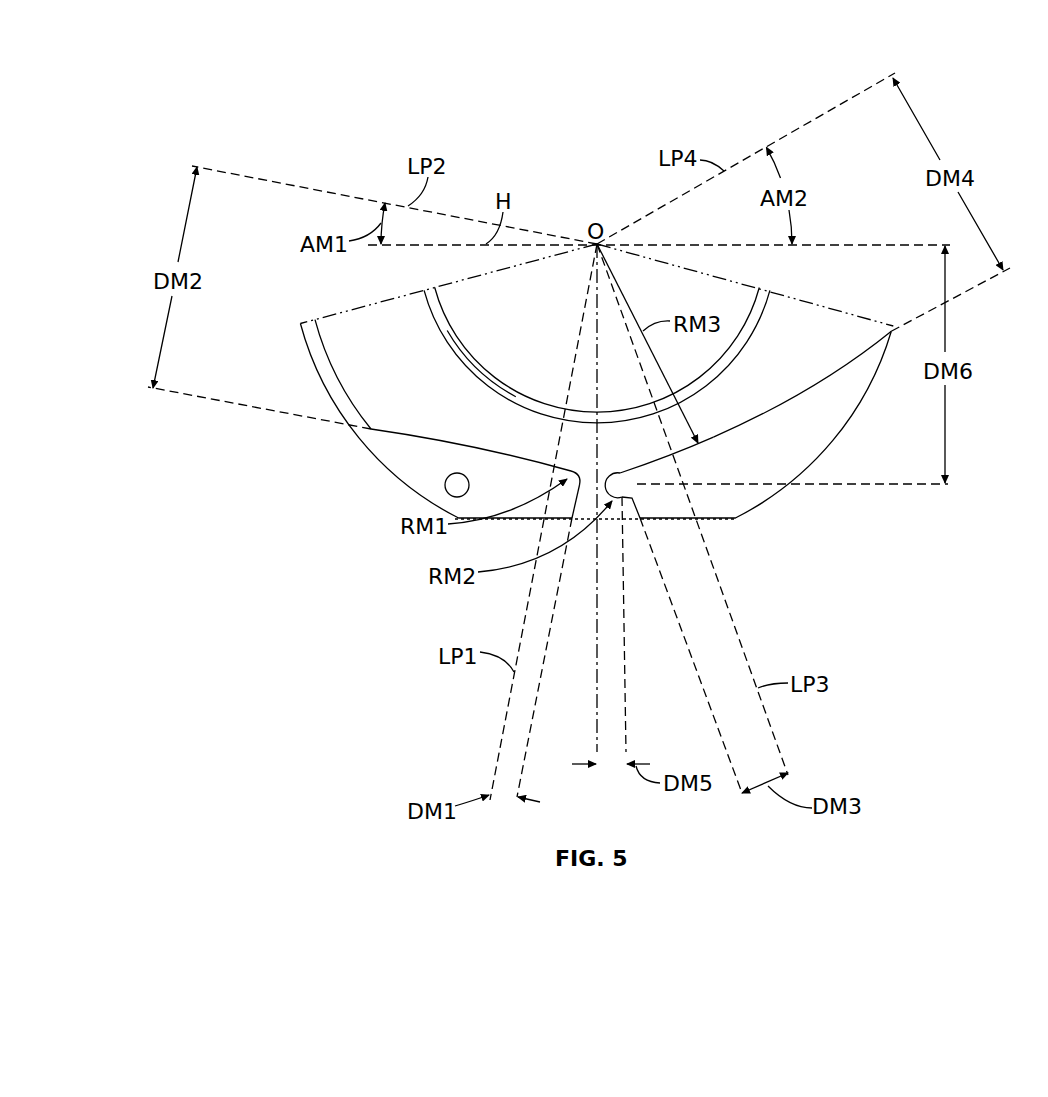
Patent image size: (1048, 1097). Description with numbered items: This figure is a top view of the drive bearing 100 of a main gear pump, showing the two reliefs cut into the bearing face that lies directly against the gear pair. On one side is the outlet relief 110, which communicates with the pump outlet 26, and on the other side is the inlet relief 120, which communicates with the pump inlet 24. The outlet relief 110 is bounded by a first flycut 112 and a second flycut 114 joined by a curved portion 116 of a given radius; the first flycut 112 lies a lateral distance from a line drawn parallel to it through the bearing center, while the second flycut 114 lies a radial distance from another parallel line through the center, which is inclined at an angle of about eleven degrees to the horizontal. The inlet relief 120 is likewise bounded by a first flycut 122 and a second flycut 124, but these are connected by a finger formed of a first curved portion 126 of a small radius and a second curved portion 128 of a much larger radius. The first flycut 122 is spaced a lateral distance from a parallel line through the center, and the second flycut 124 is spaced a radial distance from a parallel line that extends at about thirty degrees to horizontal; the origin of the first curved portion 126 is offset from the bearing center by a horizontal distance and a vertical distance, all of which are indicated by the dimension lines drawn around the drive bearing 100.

The drive bearing 100 is at (214, 118).
The outlet relief 110 is at (405, 470).
The first flycut 112 is at (575, 497).
The second flycut 114 is at (388, 435).
The curved portion 116 is at (570, 473).
The inlet relief 120 is at (808, 453).
The first flycut 122 is at (638, 508).
The second flycut 124 is at (770, 411).
The first curved portion 126 is at (633, 480).
The second curved portion 128 is at (673, 458).
The inlet 24 is at (1039, 686).
The outlet 26 is at (291, 686).